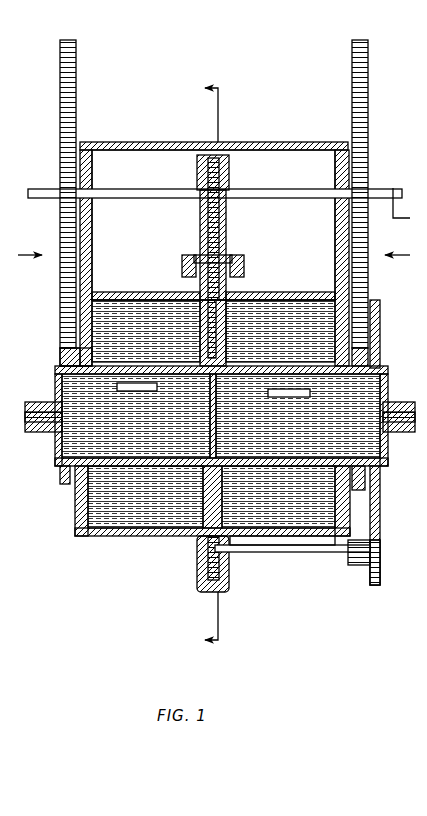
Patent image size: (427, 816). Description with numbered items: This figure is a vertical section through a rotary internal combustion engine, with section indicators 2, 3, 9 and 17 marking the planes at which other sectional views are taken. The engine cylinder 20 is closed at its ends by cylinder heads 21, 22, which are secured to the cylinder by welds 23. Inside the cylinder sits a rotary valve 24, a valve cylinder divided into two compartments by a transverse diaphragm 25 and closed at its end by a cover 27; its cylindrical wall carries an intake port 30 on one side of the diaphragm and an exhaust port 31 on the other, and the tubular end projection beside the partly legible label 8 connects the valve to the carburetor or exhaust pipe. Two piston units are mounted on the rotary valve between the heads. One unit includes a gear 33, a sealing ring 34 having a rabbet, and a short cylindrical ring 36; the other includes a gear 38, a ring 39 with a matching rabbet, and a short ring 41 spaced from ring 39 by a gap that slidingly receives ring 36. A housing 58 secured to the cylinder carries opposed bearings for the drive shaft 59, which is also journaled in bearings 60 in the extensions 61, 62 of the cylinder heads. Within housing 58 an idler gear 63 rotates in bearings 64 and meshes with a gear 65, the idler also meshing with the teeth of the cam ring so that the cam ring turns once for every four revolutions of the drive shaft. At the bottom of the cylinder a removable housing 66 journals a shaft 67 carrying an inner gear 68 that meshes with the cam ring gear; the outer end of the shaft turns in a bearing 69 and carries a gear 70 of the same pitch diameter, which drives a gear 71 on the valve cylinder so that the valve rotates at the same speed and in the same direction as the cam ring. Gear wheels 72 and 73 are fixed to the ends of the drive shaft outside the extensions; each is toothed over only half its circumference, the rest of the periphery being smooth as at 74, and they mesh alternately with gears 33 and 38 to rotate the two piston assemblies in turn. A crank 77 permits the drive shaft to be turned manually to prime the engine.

The motor housing 2 is at (388, 381).
The section line 3 is at (212, 256).
The stub shaft 8 is at (425, 396).
The section line 9 is at (197, 365).
The section line 17 is at (140, 260).
The engine cylinder 20 is at (163, 292).
The cylinder head 21 is at (100, 337).
The cylinder head 22 is at (335, 341).
The welds 23 is at (93, 296).
The rotary valve 24 is at (298, 416).
The transverse diaphragm 25 is at (216, 414).
The cover 27 is at (55, 447).
The intake port 30 is at (137, 391).
The exhaust port 31 is at (288, 397).
The gear 33 is at (60, 357).
The ring 34 is at (200, 344).
The short cylindrical ring 36 is at (226, 351).
The gear 38 is at (375, 352).
The ring 39 is at (228, 336).
The short ring 41 is at (226, 361).
The housing 58 is at (227, 223).
The drive shaft 59 is at (300, 189).
The bearings 60 is at (93, 192).
The extension 61 is at (94, 232).
The extension 62 is at (335, 236).
The idler gear 63 is at (227, 243).
The bearings 64 is at (186, 256).
The gear 65 is at (229, 170).
The removable housing 66 is at (200, 574).
The shaft 67 is at (316, 552).
The gear 68 is at (205, 584).
The bearing 69 is at (342, 560).
The gear 70 is at (381, 552).
The gear 71 is at (381, 505).
The gear wheel 72 is at (60, 111).
The gear wheel 73 is at (368, 117).
The smooth periphery 74 is at (422, 160).
The crank 77 is at (402, 218).